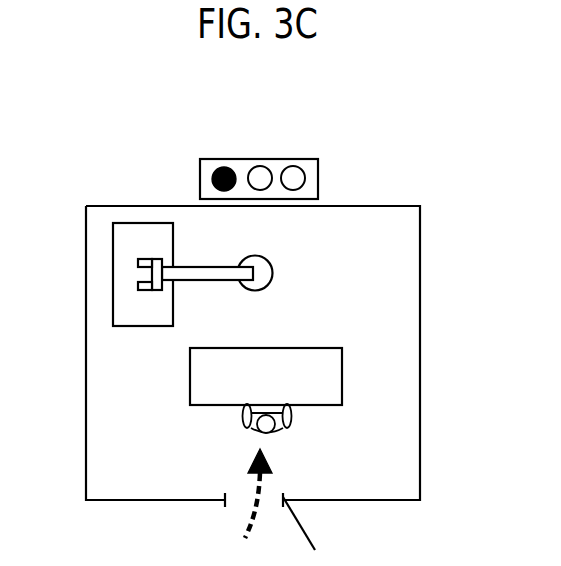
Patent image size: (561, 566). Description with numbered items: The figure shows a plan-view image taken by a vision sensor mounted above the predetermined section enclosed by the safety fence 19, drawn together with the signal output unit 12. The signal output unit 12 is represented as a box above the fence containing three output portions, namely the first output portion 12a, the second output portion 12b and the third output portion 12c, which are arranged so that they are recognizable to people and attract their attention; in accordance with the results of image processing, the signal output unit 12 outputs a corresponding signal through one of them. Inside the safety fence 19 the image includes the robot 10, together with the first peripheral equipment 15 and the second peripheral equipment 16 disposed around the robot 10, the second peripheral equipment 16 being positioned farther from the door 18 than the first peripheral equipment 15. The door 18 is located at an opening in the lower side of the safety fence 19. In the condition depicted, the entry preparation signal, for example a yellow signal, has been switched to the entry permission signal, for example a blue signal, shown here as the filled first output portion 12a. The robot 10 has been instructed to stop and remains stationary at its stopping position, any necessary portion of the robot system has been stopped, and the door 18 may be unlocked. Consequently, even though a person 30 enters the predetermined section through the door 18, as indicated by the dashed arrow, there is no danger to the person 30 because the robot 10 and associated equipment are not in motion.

The safety fence 19 is at (420, 237).
The signal output unit 12 is at (300, 159).
The first output portion 12a is at (212, 178).
The second output portion 12b is at (252, 172).
The third output portion 12c is at (297, 181).
The second peripheral equipment 16 is at (125, 288).
The robot 10 is at (197, 281).
The first peripheral equipment 15 is at (342, 375).
The person 30 is at (254, 431).
The door 18 is at (305, 533).